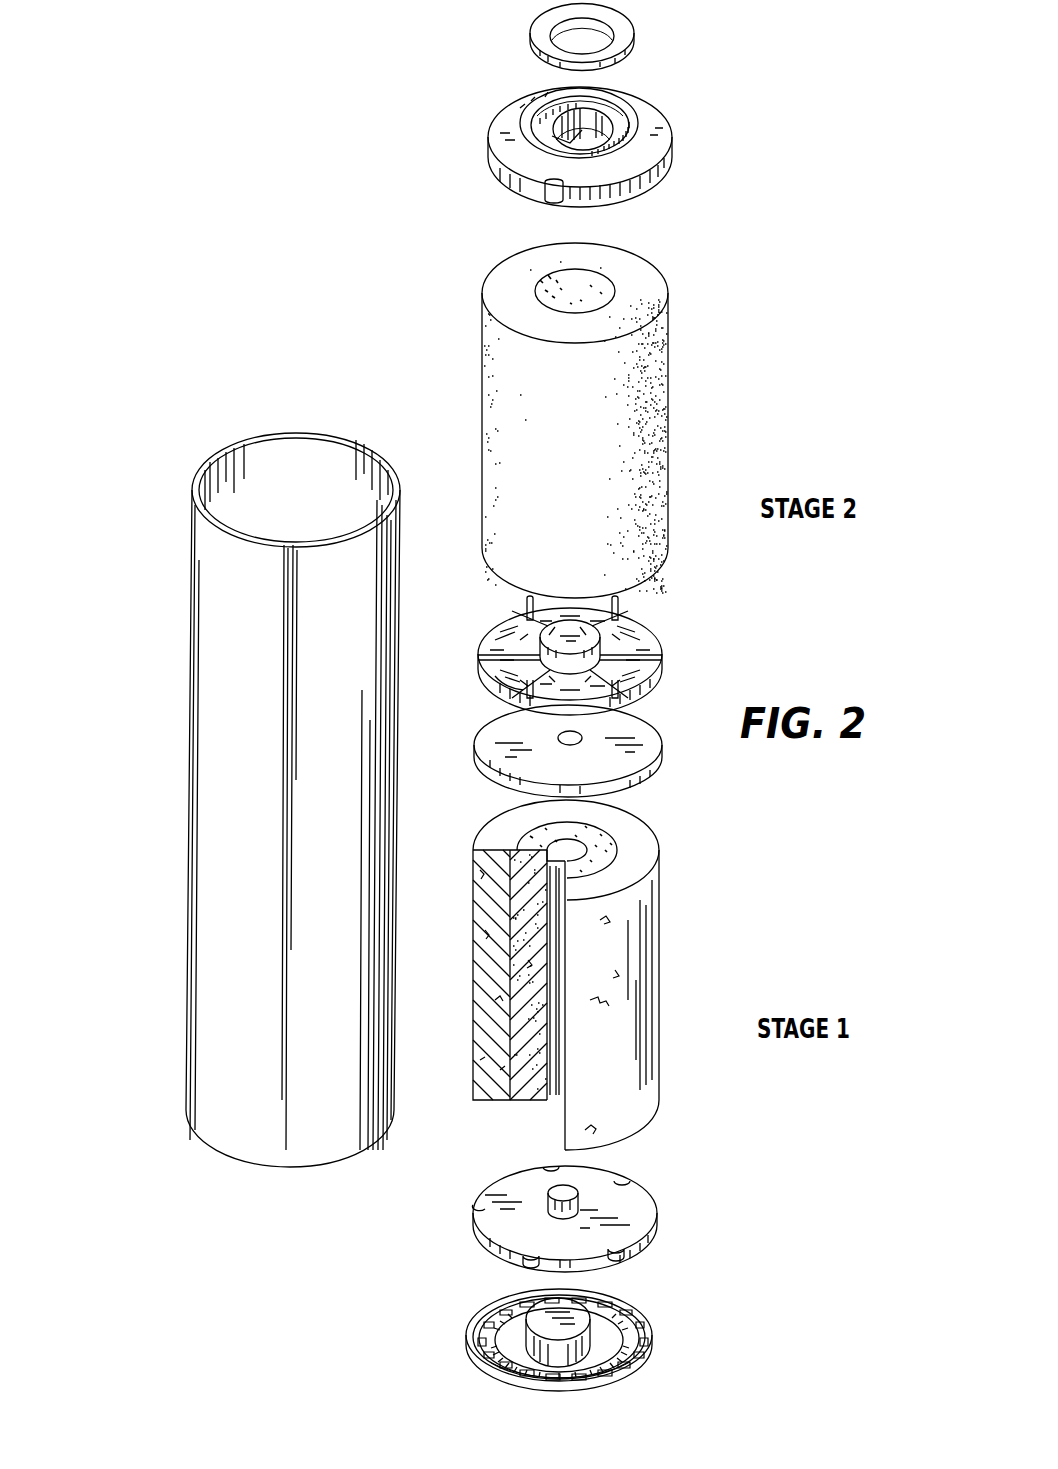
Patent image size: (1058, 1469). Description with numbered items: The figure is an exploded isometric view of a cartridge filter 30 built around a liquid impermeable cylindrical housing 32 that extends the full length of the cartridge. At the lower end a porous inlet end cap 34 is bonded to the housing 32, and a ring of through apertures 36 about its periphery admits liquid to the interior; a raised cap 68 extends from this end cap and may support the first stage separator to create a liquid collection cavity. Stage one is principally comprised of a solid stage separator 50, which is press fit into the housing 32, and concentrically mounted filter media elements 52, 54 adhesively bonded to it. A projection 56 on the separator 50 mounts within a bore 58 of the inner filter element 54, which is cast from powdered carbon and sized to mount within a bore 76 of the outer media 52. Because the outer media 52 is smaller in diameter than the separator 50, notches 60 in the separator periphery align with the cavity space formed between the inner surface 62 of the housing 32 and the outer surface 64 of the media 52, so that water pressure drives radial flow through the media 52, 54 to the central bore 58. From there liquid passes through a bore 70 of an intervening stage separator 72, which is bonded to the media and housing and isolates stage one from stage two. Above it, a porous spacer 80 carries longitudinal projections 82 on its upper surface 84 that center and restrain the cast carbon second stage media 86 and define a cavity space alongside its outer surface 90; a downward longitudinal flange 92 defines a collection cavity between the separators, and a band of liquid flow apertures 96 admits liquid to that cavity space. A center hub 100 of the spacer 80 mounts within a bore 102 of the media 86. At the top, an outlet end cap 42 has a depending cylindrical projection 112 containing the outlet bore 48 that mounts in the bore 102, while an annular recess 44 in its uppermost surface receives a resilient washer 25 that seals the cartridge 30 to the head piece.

The annular washer 25 is at (631, 27).
The cartridge filter 30 is at (762, 445).
The cylindrical housing 32 is at (188, 744).
The inlet end cap 34 is at (652, 1349).
The through apertures 36 is at (636, 1329).
The outlet end cap 42 is at (668, 129).
The annular recess 44 is at (602, 110).
The outlet bore 48 is at (586, 137).
The stage separator 50 is at (660, 1225).
The filter media element 52 is at (638, 835).
The filter media element 54 is at (605, 852).
The projection 56 is at (553, 1190).
The bore 58 is at (568, 851).
The notches 60 is at (625, 1181).
The inner surface 62 is at (305, 503).
The outer surface 64 is at (603, 1064).
The raised cap 68 is at (522, 1331).
The bore 70 is at (558, 737).
The stage separator 72 is at (660, 756).
The bore 76 is at (600, 827).
The porous spacer 80 is at (668, 650).
The longitudinal projections 82 is at (620, 611).
The upper surface 84 is at (642, 634).
The filter media 86 is at (645, 276).
The outer surface 90 is at (573, 391).
The longitudinal flange 92 is at (512, 697).
The liquid flow apertures 96 is at (487, 666).
The center hub 100 is at (545, 633).
The bore 102 is at (563, 283).
The cylindrical projection 112 is at (553, 124).